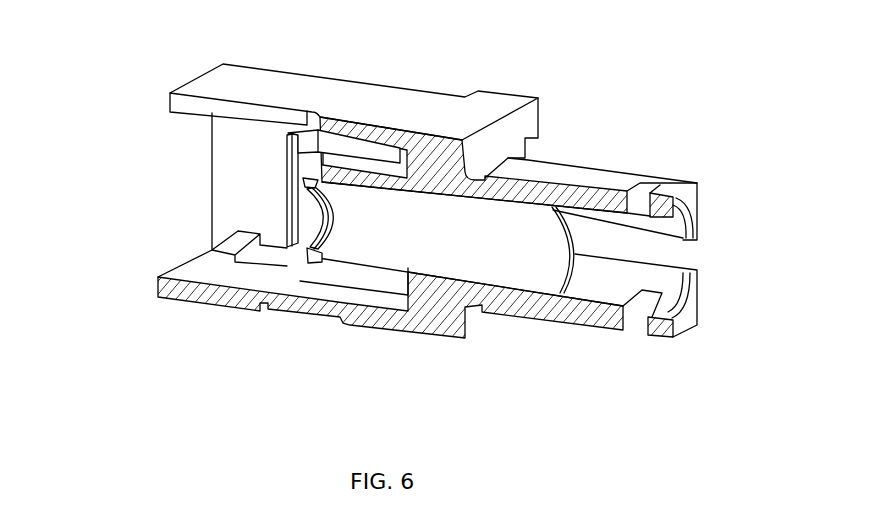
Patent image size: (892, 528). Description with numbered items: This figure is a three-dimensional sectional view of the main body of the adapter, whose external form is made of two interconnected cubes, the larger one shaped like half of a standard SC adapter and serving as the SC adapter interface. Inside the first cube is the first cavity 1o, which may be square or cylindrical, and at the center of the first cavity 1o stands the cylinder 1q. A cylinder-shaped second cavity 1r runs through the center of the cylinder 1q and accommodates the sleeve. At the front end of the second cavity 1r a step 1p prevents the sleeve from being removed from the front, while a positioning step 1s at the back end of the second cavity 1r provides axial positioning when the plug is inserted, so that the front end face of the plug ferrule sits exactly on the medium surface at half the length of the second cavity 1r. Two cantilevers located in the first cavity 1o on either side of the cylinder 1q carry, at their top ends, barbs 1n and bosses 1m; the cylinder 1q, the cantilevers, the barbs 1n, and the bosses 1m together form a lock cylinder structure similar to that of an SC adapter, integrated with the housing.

The boss 1m is at (297, 146).
The barb 1n is at (289, 174).
The first cavity 1o is at (245, 275).
The step 1p is at (323, 257).
The cylinder 1q is at (368, 282).
The second cavity 1r is at (427, 245).
The positioning step 1s is at (560, 296).